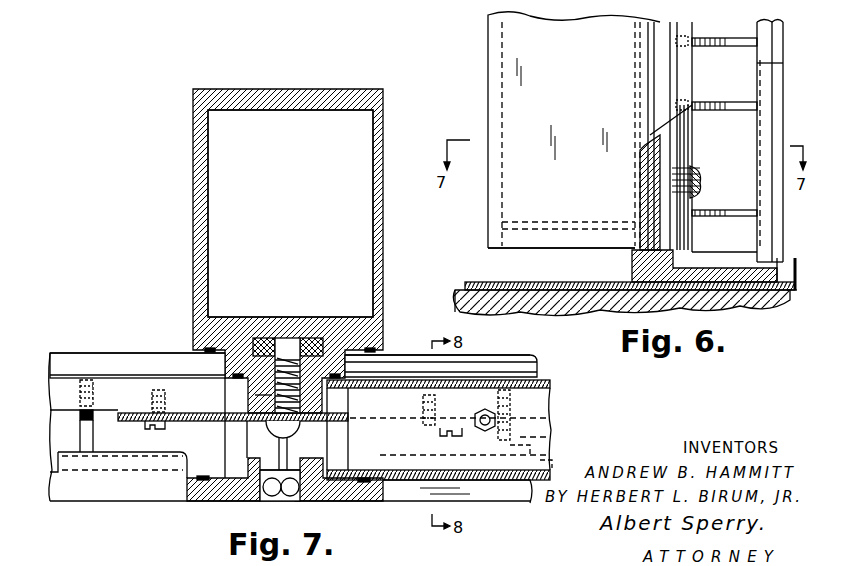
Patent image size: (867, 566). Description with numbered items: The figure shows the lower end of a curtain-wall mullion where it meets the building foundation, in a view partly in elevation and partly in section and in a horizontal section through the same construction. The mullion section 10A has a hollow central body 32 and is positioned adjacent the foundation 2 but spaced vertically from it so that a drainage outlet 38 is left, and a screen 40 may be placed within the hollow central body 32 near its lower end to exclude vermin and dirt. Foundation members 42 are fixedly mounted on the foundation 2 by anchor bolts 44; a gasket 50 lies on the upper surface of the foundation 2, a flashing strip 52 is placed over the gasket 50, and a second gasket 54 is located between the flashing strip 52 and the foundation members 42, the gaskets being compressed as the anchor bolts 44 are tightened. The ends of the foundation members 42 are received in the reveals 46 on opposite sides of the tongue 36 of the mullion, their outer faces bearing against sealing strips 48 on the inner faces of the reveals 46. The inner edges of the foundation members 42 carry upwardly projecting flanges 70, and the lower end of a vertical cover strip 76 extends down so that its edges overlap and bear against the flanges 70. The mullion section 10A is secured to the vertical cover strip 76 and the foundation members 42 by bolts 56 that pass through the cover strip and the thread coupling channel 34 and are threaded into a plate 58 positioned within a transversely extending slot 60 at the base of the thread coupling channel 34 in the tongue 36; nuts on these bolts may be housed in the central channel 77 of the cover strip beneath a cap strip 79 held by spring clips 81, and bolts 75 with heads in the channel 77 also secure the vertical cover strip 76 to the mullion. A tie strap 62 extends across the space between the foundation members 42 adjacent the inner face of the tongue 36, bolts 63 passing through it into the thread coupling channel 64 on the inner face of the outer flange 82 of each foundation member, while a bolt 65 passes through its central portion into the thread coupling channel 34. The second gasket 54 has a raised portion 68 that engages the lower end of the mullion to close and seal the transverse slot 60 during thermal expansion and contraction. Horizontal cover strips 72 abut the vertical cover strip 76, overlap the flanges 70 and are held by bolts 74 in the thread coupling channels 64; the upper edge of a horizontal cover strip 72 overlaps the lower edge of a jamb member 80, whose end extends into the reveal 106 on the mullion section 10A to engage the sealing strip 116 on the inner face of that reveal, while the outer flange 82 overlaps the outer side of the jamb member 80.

In FIG. 6, the foundation 2 is at (470, 291).
In FIG. 7, the mullion section 10A is at (190, 174).
In FIG. 6, the mullion section 10A is at (487, 80).
In FIG. 7, the hollow central body 32 is at (268, 130).
In FIG. 6, the hollow central body 32 is at (591, 45).
In FIG. 6, the thread coupling channel 34 is at (686, 134).
In FIG. 7, the tongue 36 is at (313, 400).
In FIG. 6, the tongue 36 is at (696, 34).
In FIG. 6, the drainage outlet 38 is at (497, 262).
In FIG. 6, the screen 40 is at (578, 221).
In FIG. 7, the foundation member 42 is at (88, 338).
In FIG. 6, the foundation member 42 is at (712, 262).
In FIG. 7, the anchor bolt 44 is at (478, 416).
In FIG. 7, the reveal 46 is at (210, 361).
In FIG. 6, the reveal 46 is at (642, 32).
In FIG. 7, the sealing strip 48 is at (385, 346).
In FIG. 6, the sealing strip 48 is at (648, 92).
In FIG. 6, the gasket 50 is at (595, 300).
In FIG. 6, the flashing strip 52 is at (598, 300).
In FIG. 6, the second gasket 54 is at (794, 258).
In FIG. 6, the bolt 56 is at (727, 102).
In FIG. 7, the plate 58 is at (312, 338).
In FIG. 6, the plate 58 is at (660, 165).
In FIG. 7, the transversely extending slot 60 is at (272, 338).
In FIG. 7, the tie strap 62 is at (200, 405).
In FIG. 6, the tie strap 62 is at (697, 163).
In FIG. 7, the bolt 63 is at (155, 427).
In FIG. 7, the thread coupling channel 64 is at (71, 393).
In FIG. 7, the bolt 65 is at (258, 395).
In FIG. 6, the bolt 65 is at (703, 176).
In FIG. 6, the raised portion 68 is at (632, 264).
In FIG. 7, the flange 70 is at (58, 475).
In FIG. 7, the horizontal cover strip 72 is at (122, 490).
In FIG. 7, the bolt 74 is at (95, 437).
In FIG. 6, the bolt 75 is at (743, 40).
In FIG. 7, the vertical cover strip 76 is at (233, 501).
In FIG. 6, the vertical cover strip 76 is at (783, 80).
In FIG. 7, the central channel 77 is at (312, 500).
In FIG. 7, the cap strip 79 is at (284, 500).
In FIG. 7, the jamb member 80 is at (550, 458).
In FIG. 7, the spring clip 81 is at (259, 466).
In FIG. 7, the outer flange 82 is at (128, 366).
In FIG. 7, the reveal 106 is at (218, 386).
In FIG. 6, the reveal 106 is at (686, 62).
In FIG. 7, the sealing strip 116 is at (334, 376).
In FIG. 6, the sealing strip 116 is at (680, 30).